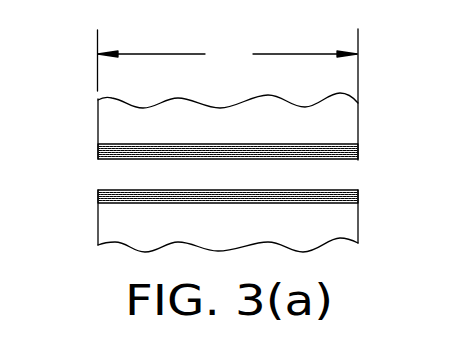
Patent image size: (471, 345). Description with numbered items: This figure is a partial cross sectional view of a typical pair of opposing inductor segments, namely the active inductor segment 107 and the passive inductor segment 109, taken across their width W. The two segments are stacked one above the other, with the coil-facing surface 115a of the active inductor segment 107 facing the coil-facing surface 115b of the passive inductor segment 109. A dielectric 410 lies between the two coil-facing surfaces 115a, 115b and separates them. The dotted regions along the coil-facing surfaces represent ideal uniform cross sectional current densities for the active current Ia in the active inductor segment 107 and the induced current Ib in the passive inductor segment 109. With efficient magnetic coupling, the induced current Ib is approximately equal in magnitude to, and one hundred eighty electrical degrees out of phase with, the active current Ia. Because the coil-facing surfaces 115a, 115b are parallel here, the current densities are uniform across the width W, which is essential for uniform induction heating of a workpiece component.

The active inductor segment 107 is at (340, 230).
The passive inductor segment 109 is at (348, 113).
The coil-facing surface 115a is at (349, 189).
The coil-facing surface 115b is at (356, 159).
The dielectric 410 is at (107, 175).
The active current Ia is at (102, 193).
The induced current Ib is at (103, 150).
The width W is at (228, 94).